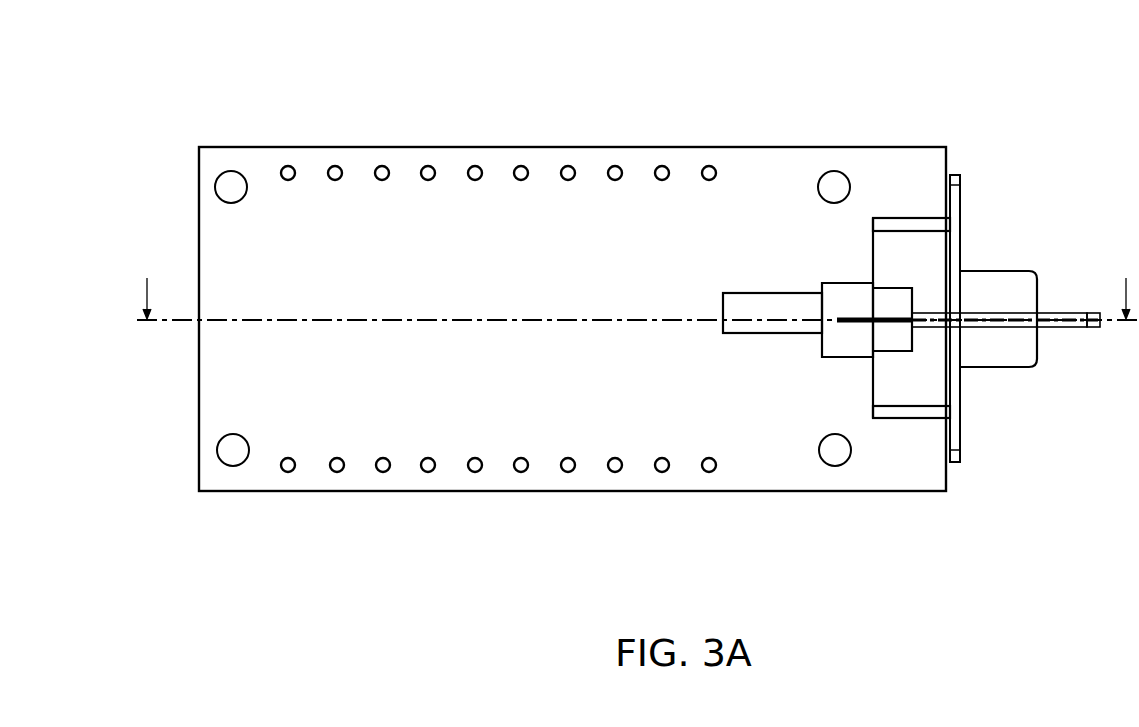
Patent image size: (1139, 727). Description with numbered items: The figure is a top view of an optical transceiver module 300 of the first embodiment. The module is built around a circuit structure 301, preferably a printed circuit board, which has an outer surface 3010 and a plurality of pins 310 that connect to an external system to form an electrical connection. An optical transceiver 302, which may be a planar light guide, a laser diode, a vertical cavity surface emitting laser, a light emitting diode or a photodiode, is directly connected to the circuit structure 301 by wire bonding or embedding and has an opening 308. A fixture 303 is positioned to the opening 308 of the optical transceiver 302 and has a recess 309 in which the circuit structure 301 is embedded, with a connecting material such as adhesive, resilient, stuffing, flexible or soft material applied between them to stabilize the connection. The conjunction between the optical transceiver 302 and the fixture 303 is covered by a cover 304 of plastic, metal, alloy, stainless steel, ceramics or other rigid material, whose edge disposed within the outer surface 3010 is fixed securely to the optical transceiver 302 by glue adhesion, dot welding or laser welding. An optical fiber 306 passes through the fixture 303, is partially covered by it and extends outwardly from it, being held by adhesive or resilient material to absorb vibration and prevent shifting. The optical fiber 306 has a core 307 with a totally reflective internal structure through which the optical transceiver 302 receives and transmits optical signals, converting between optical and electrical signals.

The optical transceiver module 300 is at (224, 49).
The outer surface 3010 is at (563, 276).
The circuit structure 301 is at (357, 162).
The pins 310 is at (337, 472).
The optical transceiver 302 is at (746, 303).
The cover 304 is at (858, 300).
The recess 309 is at (900, 352).
The fixture 303 is at (998, 283).
The optical fiber 306 is at (1070, 328).
The core 307 is at (1087, 328).
The opening 308 is at (930, 327).